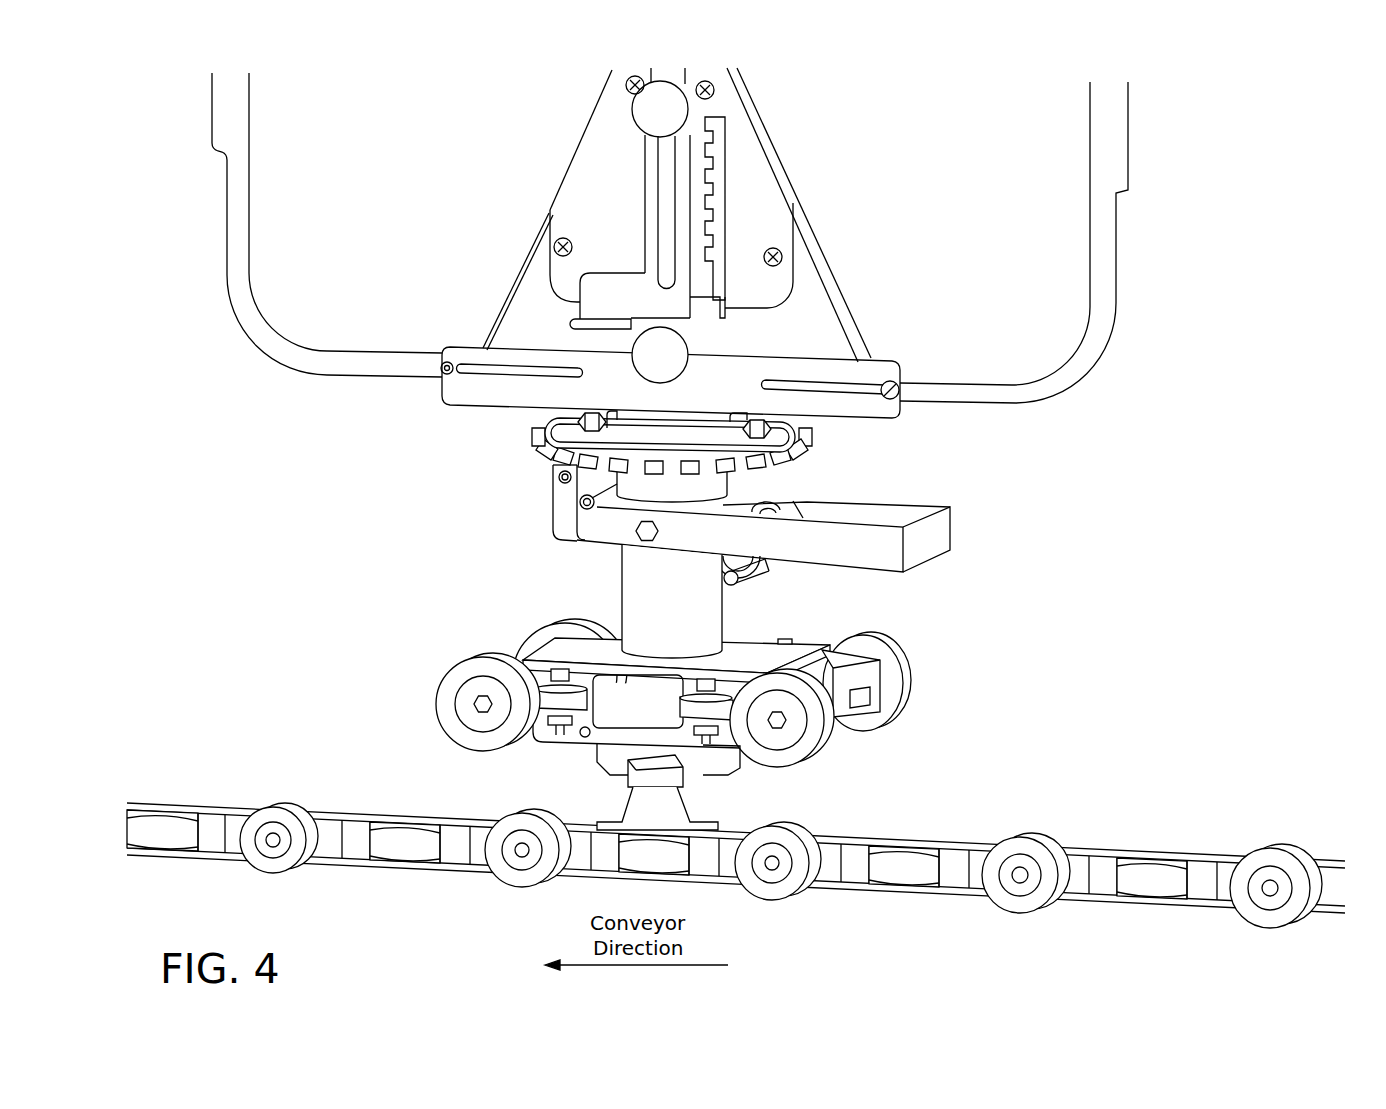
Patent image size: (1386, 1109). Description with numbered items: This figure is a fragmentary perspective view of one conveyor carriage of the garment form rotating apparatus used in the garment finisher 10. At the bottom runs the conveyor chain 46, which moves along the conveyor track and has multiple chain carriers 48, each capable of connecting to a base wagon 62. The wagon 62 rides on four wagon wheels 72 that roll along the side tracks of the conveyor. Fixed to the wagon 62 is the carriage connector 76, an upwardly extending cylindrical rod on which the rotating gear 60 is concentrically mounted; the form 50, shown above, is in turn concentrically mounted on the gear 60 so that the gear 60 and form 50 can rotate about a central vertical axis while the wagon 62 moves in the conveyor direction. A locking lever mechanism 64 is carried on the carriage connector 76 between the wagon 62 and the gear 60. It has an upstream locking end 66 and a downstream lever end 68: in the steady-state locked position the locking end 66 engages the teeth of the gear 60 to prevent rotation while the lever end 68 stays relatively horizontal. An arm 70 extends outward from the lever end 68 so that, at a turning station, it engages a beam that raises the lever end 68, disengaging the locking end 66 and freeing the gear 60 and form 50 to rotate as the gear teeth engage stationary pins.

The garment finisher 10 is at (99, 281).
The conveyor chain 46 is at (1160, 852).
The chain carrier 48 is at (690, 812).
The form 50 is at (1117, 290).
The rotating gear 60 is at (527, 447).
The base wagon 62 is at (577, 745).
The locking lever mechanism 64 is at (797, 508).
The upstream locking end 66 is at (548, 510).
The downstream lever end 68 is at (927, 538).
The arm 70 is at (738, 584).
The wagon wheel 72 is at (888, 645).
The carriage connector 76 is at (620, 592).